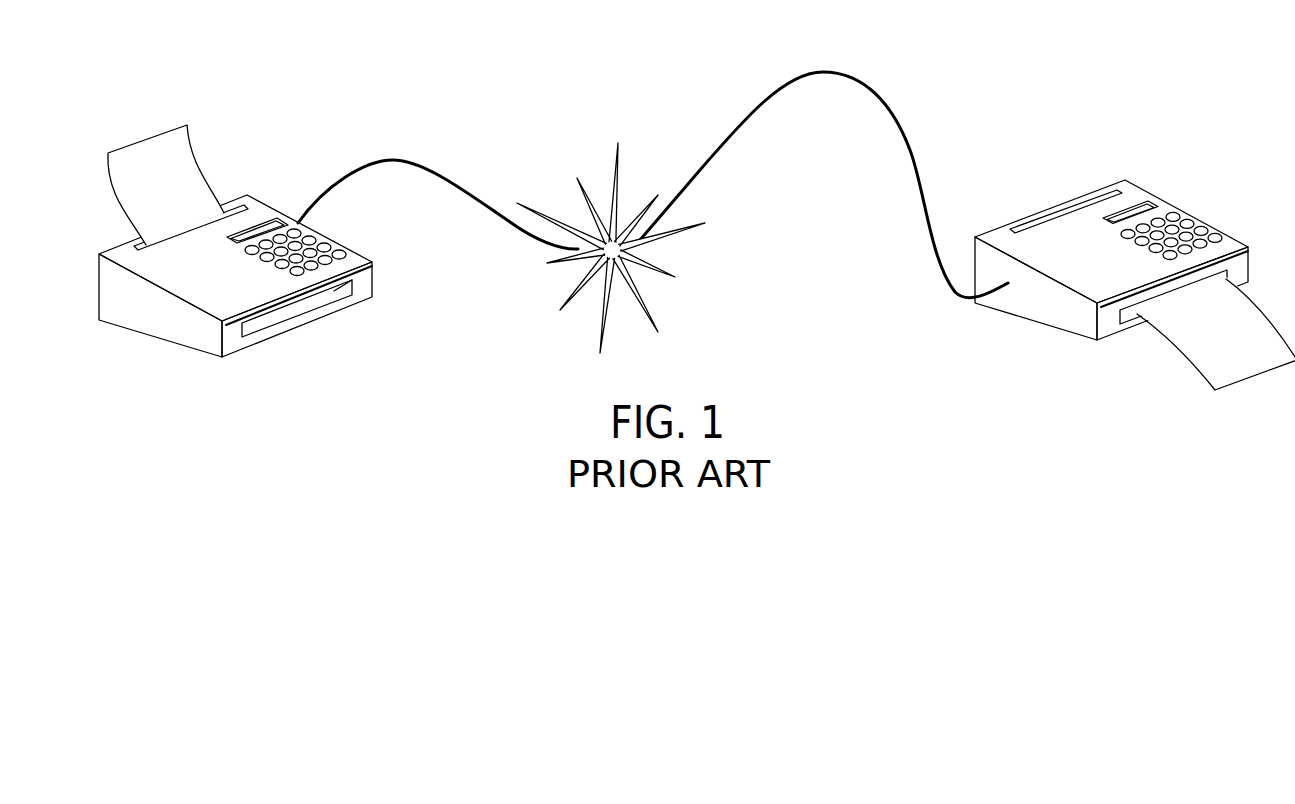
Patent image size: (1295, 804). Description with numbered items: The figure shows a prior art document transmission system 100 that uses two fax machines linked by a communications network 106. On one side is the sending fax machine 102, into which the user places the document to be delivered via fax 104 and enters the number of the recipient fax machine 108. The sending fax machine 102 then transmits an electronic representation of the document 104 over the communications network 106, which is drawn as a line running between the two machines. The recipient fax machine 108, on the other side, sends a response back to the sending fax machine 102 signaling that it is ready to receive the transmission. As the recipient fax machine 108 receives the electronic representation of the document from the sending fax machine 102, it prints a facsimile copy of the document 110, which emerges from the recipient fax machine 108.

The document transmission system 100 is at (532, 46).
The sending fax machine 102 is at (152, 338).
The document to be delivered via fax 104 is at (186, 120).
The communications network 106 is at (405, 157).
The recipient fax machine 108 is at (1156, 192).
The facsimile copy of the document 110 is at (1213, 395).